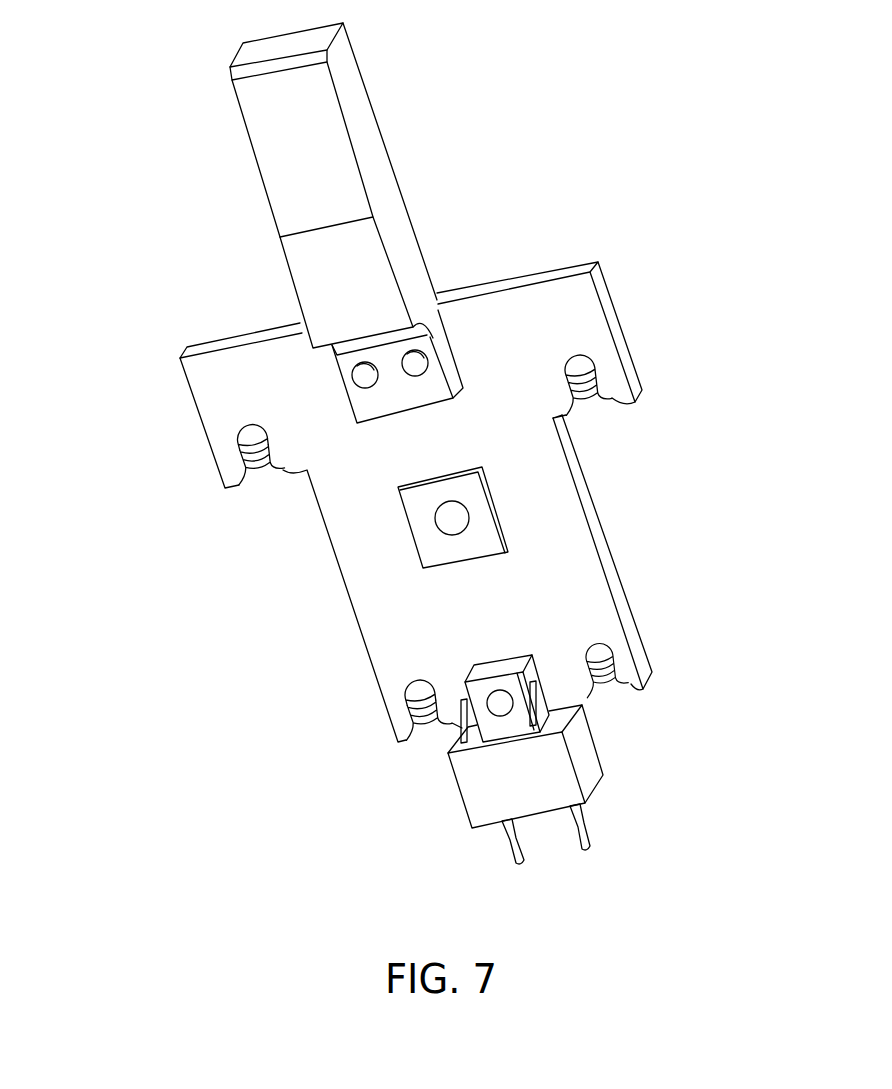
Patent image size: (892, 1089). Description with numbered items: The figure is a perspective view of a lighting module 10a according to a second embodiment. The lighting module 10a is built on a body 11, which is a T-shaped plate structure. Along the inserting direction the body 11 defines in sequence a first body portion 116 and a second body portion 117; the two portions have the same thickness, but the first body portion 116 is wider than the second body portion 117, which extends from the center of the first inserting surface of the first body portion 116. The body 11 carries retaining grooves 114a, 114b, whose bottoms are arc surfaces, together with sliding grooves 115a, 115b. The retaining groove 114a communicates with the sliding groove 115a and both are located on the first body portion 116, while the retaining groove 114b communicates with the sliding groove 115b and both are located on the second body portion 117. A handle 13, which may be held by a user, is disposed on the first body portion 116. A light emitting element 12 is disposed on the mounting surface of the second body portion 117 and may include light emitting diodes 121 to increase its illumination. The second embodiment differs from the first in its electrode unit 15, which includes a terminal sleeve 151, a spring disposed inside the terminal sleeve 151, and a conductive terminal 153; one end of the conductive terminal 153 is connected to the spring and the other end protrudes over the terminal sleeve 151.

The lighting module 10a is at (620, 28).
The body 11 is at (638, 247).
The first body portion 116 is at (628, 347).
The second body portion 117 is at (618, 575).
The retaining groove 114a is at (245, 436).
The sliding groove 115a is at (255, 458).
The retaining groove 114b is at (420, 692).
The sliding groove 115b is at (428, 718).
The handle 13 is at (362, 108).
The light emitting element 12 is at (506, 532).
The light emitting diode 121 is at (452, 515).
The electrode unit 15 is at (600, 747).
The terminal sleeve 151 is at (470, 718).
The conductive terminal 153 is at (587, 832).